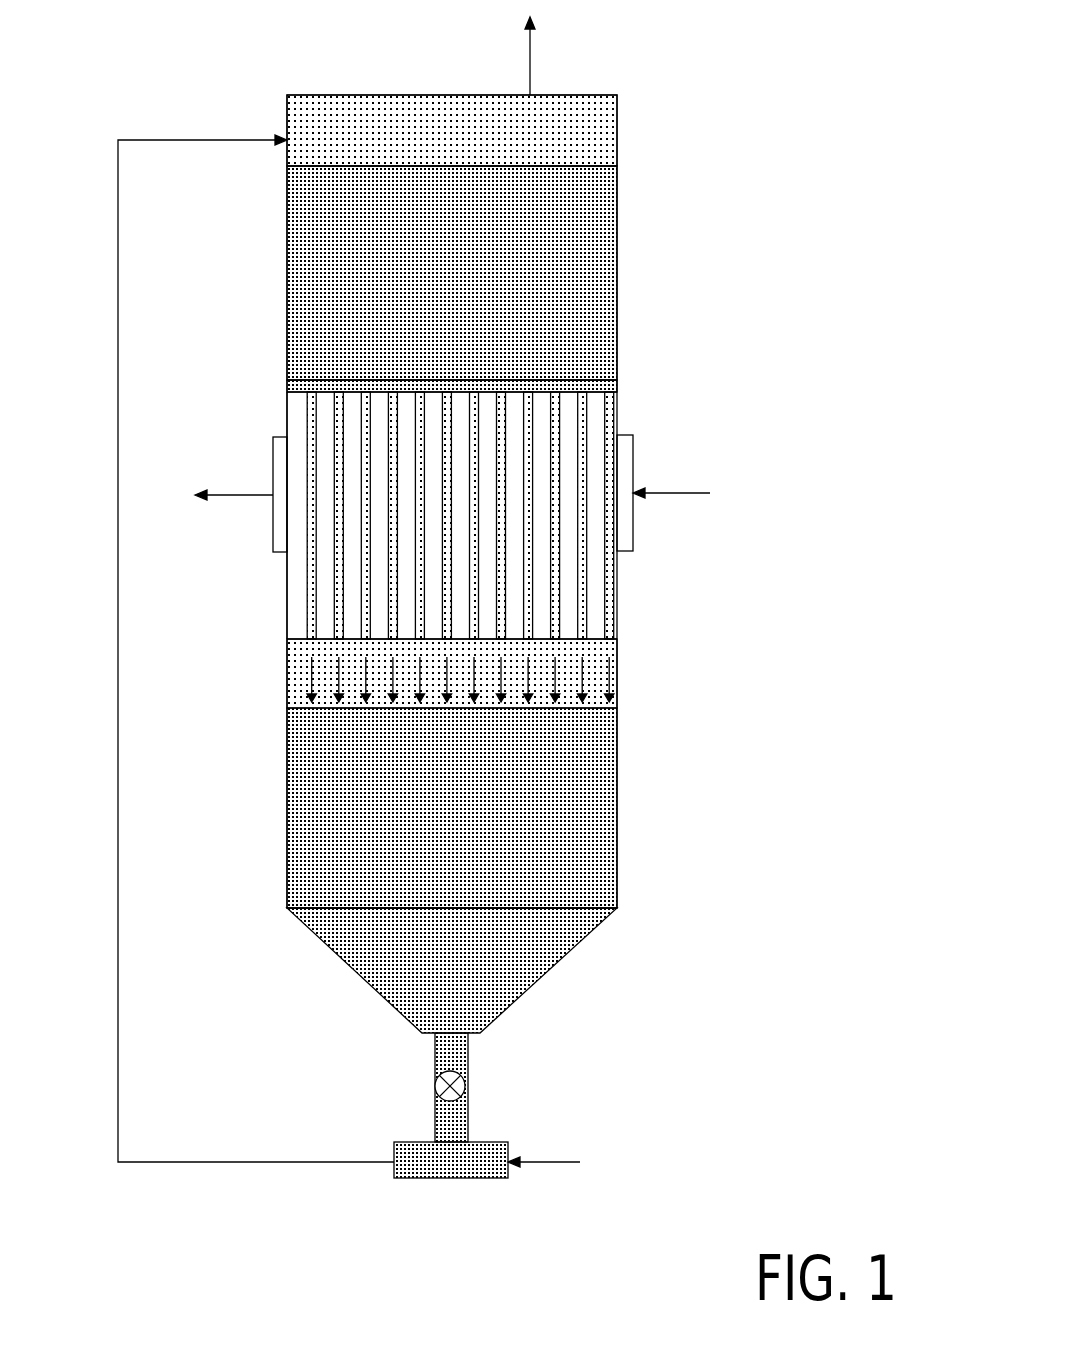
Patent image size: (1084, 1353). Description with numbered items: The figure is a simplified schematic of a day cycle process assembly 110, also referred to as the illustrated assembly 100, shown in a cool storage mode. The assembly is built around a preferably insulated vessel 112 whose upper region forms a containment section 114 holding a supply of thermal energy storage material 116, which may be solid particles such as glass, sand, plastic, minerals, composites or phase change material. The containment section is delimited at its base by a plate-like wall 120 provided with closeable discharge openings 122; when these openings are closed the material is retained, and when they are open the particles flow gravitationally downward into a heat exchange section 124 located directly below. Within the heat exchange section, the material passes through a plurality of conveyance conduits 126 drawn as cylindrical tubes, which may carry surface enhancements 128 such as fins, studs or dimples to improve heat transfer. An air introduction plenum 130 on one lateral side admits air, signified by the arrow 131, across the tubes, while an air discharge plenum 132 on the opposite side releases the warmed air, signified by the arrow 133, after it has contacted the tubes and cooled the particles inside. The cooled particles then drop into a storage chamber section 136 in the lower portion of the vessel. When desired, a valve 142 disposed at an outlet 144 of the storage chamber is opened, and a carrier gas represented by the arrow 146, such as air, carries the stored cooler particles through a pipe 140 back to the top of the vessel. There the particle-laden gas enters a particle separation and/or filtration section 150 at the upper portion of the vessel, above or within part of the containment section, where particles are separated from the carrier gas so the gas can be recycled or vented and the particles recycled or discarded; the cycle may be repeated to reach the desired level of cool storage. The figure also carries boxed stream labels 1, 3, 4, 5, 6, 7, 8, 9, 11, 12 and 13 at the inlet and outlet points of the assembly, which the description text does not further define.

The assembly 100 is at (160, 936).
The day cycle process assembly 110 is at (859, 214).
The vessel 112 is at (517, 501).
The containment section 114 is at (463, 277).
The thermal energy storage material 116 is at (305, 218).
The wall 120 is at (295, 386).
The closeable discharge openings 122 is at (313, 385).
The heat exchange section 124 is at (298, 613).
The conveyance conduits 126 is at (585, 627).
The surface enhancements 128 is at (600, 597).
The air introduction plenum 130 is at (633, 529).
The arrow signifying introduced air 131 is at (675, 484).
The air discharge plenum 132 is at (277, 533).
The arrow signifying discharged air 133 is at (228, 493).
The storage chamber section 136 is at (453, 831).
The pipe 140 is at (188, 1162).
The valve 142 is at (465, 1087).
The outlet 144 is at (468, 1053).
The arrow representing carrier gas 146 is at (545, 1162).
The particle separation and/or filtration section 150 is at (452, 130).
The stream 1 is at (477, 213).
The stream 3 is at (585, 378).
The stream 4 is at (477, 469).
The stream 5 is at (703, 522).
The stream 6 is at (203, 524).
The stream 7 is at (633, 472).
The stream 8 is at (273, 460).
The stream 9 is at (475, 813).
The stream 11 is at (466, 1081).
The stream 12 is at (569, 1192).
The stream 13 is at (566, 55).